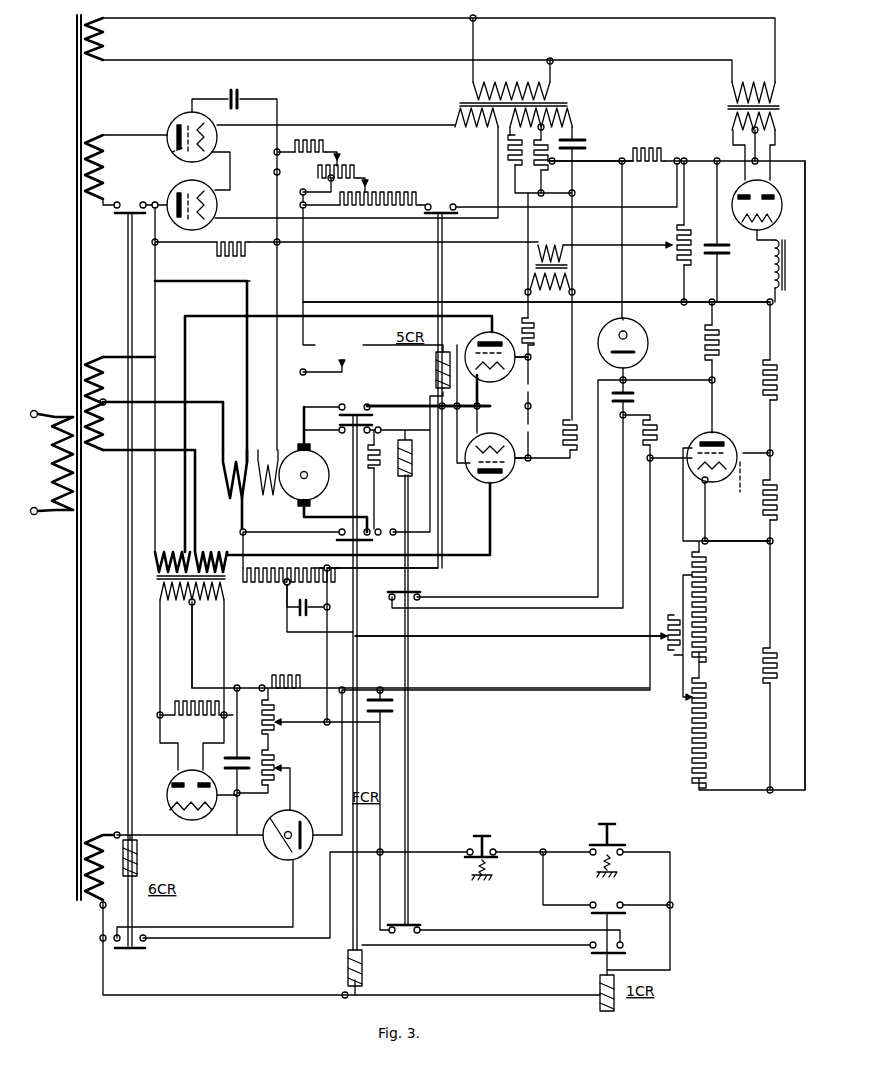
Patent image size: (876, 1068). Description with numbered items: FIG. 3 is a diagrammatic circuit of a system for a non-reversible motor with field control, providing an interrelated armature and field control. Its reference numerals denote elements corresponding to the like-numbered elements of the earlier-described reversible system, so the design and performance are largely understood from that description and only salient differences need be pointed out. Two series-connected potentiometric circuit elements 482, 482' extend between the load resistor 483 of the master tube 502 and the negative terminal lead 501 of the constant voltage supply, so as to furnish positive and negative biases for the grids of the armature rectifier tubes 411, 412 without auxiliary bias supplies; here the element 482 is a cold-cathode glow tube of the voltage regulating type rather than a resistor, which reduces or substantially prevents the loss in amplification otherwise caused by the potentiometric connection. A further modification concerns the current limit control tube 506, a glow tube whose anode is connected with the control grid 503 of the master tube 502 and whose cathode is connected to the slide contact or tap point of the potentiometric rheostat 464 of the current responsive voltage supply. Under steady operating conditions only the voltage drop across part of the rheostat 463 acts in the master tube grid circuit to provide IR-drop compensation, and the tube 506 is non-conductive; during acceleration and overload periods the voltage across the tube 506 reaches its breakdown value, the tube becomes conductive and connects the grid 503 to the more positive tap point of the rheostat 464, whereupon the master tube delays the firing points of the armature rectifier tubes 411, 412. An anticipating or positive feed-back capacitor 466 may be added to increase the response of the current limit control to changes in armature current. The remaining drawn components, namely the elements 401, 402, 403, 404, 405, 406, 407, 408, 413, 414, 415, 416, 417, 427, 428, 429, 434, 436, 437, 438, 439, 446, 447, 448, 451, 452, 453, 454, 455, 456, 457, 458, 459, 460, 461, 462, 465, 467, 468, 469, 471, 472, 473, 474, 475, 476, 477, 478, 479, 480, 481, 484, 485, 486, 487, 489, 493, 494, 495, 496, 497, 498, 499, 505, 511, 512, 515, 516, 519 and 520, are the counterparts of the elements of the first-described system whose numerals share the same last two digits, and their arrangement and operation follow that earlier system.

The transformer primary winding 401 is at (76, 540).
The transformer secondary winding 402 is at (112, 367).
The resistor 403 is at (103, 170).
The resistor 404 is at (105, 40).
The resistor 405 is at (110, 830).
The motor 406 is at (320, 455).
The heater element 407 is at (236, 498).
The heater element 408 is at (268, 500).
The armature rectifier tube 411 is at (510, 340).
The armature rectifier tube 412 is at (505, 480).
The conductor 413 is at (385, 406).
The relay contact 414 is at (353, 415).
The relay contact 415 is at (334, 548).
The relay coil 416 is at (364, 968).
The relay contact 417 is at (339, 422).
The relay contact 427 is at (590, 955).
The relay coil 1CR 428 is at (598, 982).
The relay contact 429 is at (625, 915).
The start push button 434 is at (626, 842).
The stop push button 436 is at (498, 864).
The relay contact 437 is at (130, 952).
The relay coil 6CR 438 is at (138, 862).
The relay contact 439 is at (118, 218).
The relay contact 446 is at (420, 922).
The relay coil 447 is at (414, 440).
The relay contact 448 is at (418, 590).
The relay coil 5CR 451 is at (434, 366).
The relay contact 452 is at (440, 210).
The resistor 453 is at (270, 582).
The tap 454 is at (284, 596).
The capacitor 455 is at (292, 626).
The transformer primary winding 456 is at (180, 548).
The transformer primary winding 457 is at (212, 546).
The transformer secondary winding 458 is at (160, 582).
The center tap 459 is at (178, 643).
The capacitor 460 is at (248, 773).
The rectifier tube 461 is at (170, 778).
The resistor 462 is at (195, 720).
The potentiometric rheostat 463 is at (275, 712).
The potentiometric rheostat 464 is at (275, 752).
The resistor 465 is at (280, 674).
The positive feed-back capacitor 466 is at (394, 706).
The tube 467 is at (168, 125).
The grid 468 is at (166, 148).
The resistor 469 is at (226, 240).
The tube 471 is at (169, 193).
The transformer secondary winding 472 is at (482, 123).
The transformer 473 is at (560, 100).
The transformer secondary winding 474 is at (572, 120).
The filter network 475 is at (572, 172).
The transformer 476 is at (568, 268).
The conductor 477 is at (528, 365).
The resistor 478 is at (538, 340).
The conductor 479 is at (512, 470).
The resistor 480 is at (572, 440).
The conductor 481 is at (595, 161).
The cold-cathode tube 482 is at (640, 340).
The potentiometric circuit element 482' is at (651, 144).
The load resistor 483 is at (720, 342).
The resistor 484 is at (762, 376).
The resistor 485 is at (762, 502).
The resistor 486 is at (706, 588).
The resistor 487 is at (668, 644).
The conductor 489 is at (538, 626).
The transformer 493 is at (776, 100).
The rectifier tube 494 is at (782, 180).
The inductor 495 is at (770, 280).
The capacitor 496 is at (730, 250).
The conductor 497 is at (742, 306).
The resistor 498 is at (706, 712).
The resistor 499 is at (760, 655).
The negative terminal lead 501 is at (790, 800).
The master tube 502 is at (722, 434).
The control grid 503 is at (741, 481).
The conductor 505 is at (762, 542).
The current limit control tube 506 is at (272, 864).
The capacitor 511 is at (636, 397).
The resistor 512 is at (660, 434).
The resistor 515 is at (328, 140).
The resistor 516 is at (345, 170).
The resistor 519 is at (392, 192).
The resistor 520 is at (677, 250).